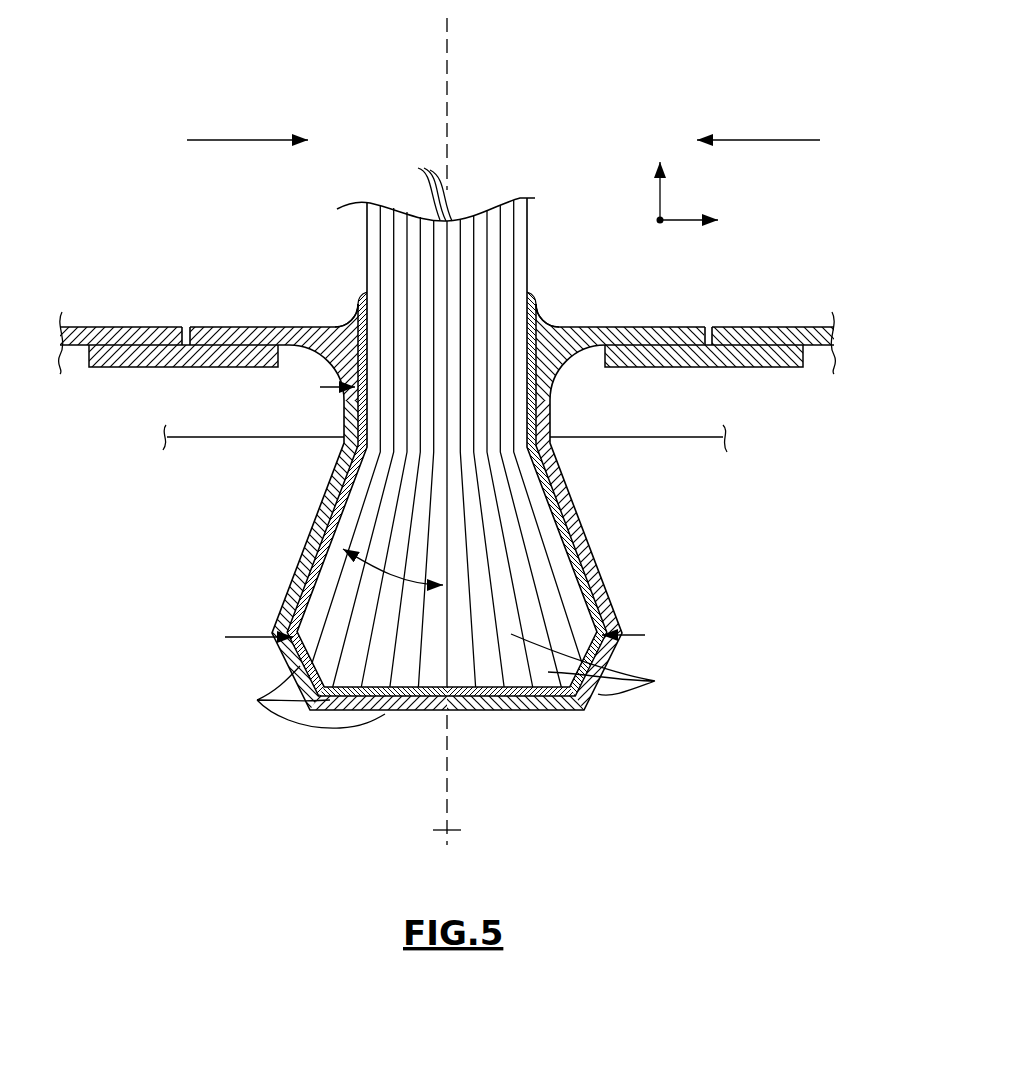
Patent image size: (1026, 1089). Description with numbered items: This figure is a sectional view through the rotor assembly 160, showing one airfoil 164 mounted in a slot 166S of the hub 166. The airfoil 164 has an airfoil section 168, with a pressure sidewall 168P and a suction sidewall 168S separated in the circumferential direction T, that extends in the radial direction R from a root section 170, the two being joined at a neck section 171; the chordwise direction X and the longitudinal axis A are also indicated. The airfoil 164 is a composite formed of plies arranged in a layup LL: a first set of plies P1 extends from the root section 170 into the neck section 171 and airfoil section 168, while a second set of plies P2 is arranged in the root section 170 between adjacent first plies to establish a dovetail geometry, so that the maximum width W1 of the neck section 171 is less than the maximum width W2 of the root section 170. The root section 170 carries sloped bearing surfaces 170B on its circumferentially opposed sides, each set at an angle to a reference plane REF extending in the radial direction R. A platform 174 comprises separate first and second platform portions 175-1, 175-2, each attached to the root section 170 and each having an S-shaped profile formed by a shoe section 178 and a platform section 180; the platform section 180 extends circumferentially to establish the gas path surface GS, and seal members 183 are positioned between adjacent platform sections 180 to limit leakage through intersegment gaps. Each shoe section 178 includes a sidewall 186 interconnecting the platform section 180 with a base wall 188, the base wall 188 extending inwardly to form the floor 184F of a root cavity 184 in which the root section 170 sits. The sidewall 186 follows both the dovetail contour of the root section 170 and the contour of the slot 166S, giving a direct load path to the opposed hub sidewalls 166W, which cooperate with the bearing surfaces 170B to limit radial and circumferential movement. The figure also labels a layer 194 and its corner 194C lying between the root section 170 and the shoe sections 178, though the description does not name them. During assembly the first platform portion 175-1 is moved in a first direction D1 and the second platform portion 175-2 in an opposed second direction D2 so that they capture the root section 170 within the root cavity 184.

The rotor assembly 160 is at (291, 69).
The airfoil 164 is at (380, 197).
The hub 166 is at (730, 437).
The slot 166S is at (512, 702).
The sidewall of hub 166W is at (293, 460).
The airfoil section 168 is at (529, 218).
The pressure sidewall 168P is at (529, 258).
The suction sidewall 168S is at (362, 262).
The root section 170 is at (572, 558).
The bearing surface 170B is at (592, 592).
The neck section 171 is at (550, 378).
The platform 174 is at (273, 322).
The first platform portion 175-1 is at (341, 412).
The second platform portion 175-2 is at (551, 408).
The shoe section 178 is at (335, 545).
The platform section 180 is at (108, 325).
The seal member 183 is at (113, 369).
The root cavity 184 is at (591, 700).
The floor 184F is at (579, 703).
The sidewall 186 is at (322, 553).
The base wall 188 is at (398, 698).
The coating 194 is at (533, 294).
The coating corner 194C is at (352, 316).
The first set of plies P1 is at (421, 188).
The second set of plies P2 is at (457, 681).
The maximum width of neck section W1 is at (336, 387).
The maximum width of root section W2 is at (645, 635).
The first direction D1 is at (225, 140).
The second direction D2 is at (762, 140).
The reference plane REF is at (453, 62).
The layup LL is at (498, 197).
The gas path surface GS is at (626, 326).
The longitudinal axis A is at (447, 827).
The radial direction R is at (660, 174).
The circumferential direction T is at (701, 220).
The chordwise direction X is at (658, 223).